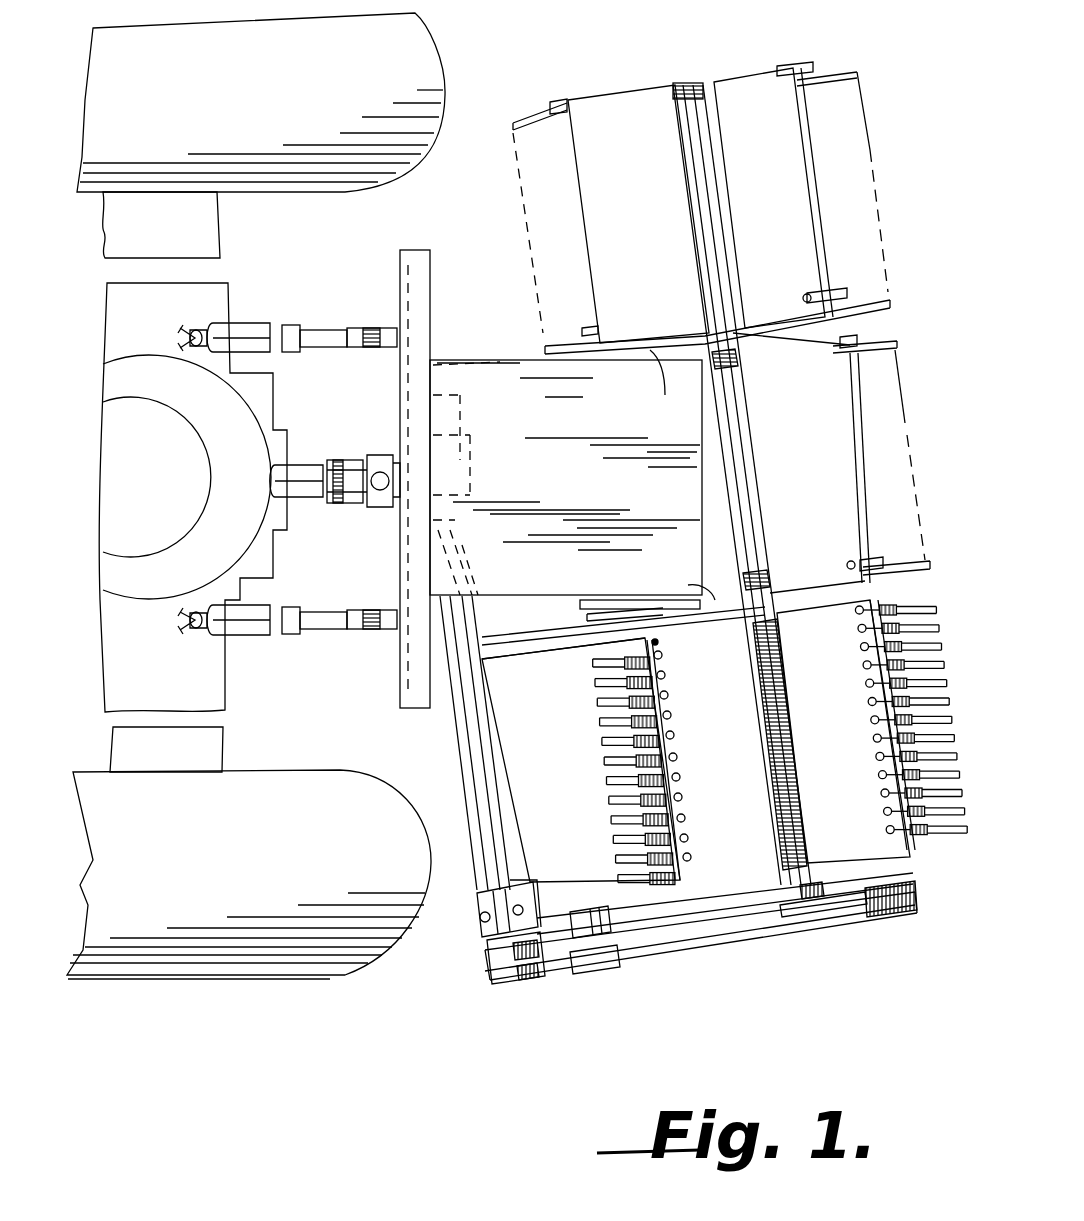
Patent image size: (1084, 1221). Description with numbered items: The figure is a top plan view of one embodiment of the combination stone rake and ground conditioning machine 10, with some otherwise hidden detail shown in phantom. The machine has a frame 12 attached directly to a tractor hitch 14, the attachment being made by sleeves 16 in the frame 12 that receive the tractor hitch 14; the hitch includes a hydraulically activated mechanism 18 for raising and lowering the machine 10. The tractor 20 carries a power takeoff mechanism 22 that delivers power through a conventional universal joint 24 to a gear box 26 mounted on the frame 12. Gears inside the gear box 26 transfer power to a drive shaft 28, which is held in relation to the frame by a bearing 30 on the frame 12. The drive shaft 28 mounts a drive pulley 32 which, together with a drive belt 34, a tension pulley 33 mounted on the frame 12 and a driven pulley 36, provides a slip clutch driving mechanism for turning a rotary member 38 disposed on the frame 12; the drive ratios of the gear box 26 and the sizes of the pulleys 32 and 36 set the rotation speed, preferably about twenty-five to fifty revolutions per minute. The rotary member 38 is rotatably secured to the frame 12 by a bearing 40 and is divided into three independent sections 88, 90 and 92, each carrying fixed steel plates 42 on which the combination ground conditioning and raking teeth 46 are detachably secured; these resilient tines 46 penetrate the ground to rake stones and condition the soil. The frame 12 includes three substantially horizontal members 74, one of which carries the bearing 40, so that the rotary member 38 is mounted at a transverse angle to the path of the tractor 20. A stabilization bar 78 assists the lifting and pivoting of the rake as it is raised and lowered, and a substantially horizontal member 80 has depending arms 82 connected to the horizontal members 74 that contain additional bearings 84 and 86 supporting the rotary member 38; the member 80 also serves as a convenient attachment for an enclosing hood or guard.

The stone rake and ground conditioning machine 10 is at (740, 62).
The frame 12 is at (400, 283).
The tractor hitch 14 is at (320, 330).
The sleeves 16 is at (362, 328).
The hydraulically activated mechanism 18 is at (262, 306).
The tractor 20 is at (492, 50).
The power takeoff mechanism 22 is at (303, 460).
The universal joint 24 is at (347, 460).
The gear box 26 is at (465, 432).
The drive shaft 28 is at (470, 748).
The bearing 30 is at (477, 955).
The drive pulley 32 is at (530, 982).
The tension pulley 33 is at (600, 960).
The drive belt 34 is at (652, 950).
The driven pulley 36 is at (795, 938).
The rotary member 38 is at (686, 82).
The bearing 40 is at (828, 900).
The steel plates 42 is at (830, 510).
The teeth 46 is at (948, 778).
The horizontal members 74 is at (655, 365).
The stabilization bar 78 is at (303, 498).
The horizontal member 80 is at (566, 490).
The depending arms 82 is at (668, 378).
The bearing 84 is at (808, 598).
The bearing 86 is at (748, 345).
The section 88 is at (950, 686).
The section 90 is at (940, 412).
The section 92 is at (882, 190).